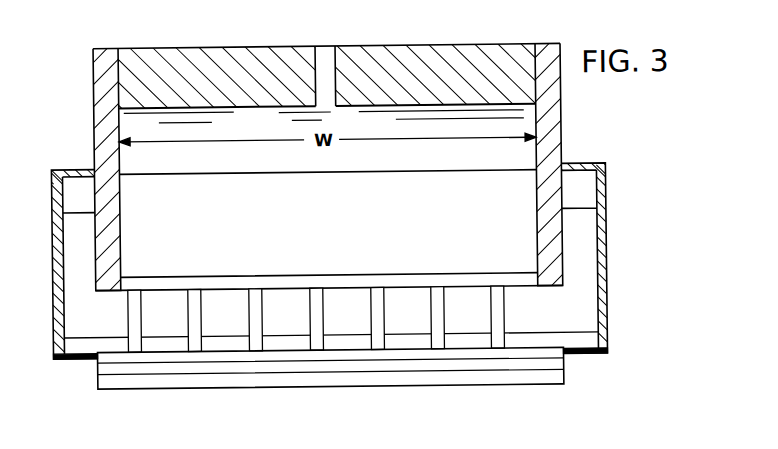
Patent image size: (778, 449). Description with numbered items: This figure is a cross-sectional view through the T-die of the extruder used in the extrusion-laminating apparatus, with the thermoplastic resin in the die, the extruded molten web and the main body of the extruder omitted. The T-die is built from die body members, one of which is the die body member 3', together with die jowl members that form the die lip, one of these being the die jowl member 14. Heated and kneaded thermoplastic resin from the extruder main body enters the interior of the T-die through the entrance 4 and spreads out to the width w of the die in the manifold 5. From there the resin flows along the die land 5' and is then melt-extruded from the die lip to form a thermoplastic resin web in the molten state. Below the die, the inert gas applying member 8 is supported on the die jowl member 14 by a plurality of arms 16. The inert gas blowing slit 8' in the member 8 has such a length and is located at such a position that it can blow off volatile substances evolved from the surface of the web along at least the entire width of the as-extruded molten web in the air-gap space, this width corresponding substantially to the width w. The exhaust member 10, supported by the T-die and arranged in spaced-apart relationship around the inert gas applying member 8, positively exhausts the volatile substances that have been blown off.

The die body member 3' is at (323, 57).
The entrance 4 is at (328, 49).
The manifold 5 is at (323, 96).
The die land 5' is at (357, 148).
The die jowl member 14 is at (237, 280).
The arms 16 is at (252, 334).
The inert gas applying member 8 is at (330, 391).
The inert gas blowing slit 8' is at (331, 396).
The exhaust member 10 is at (52, 260).